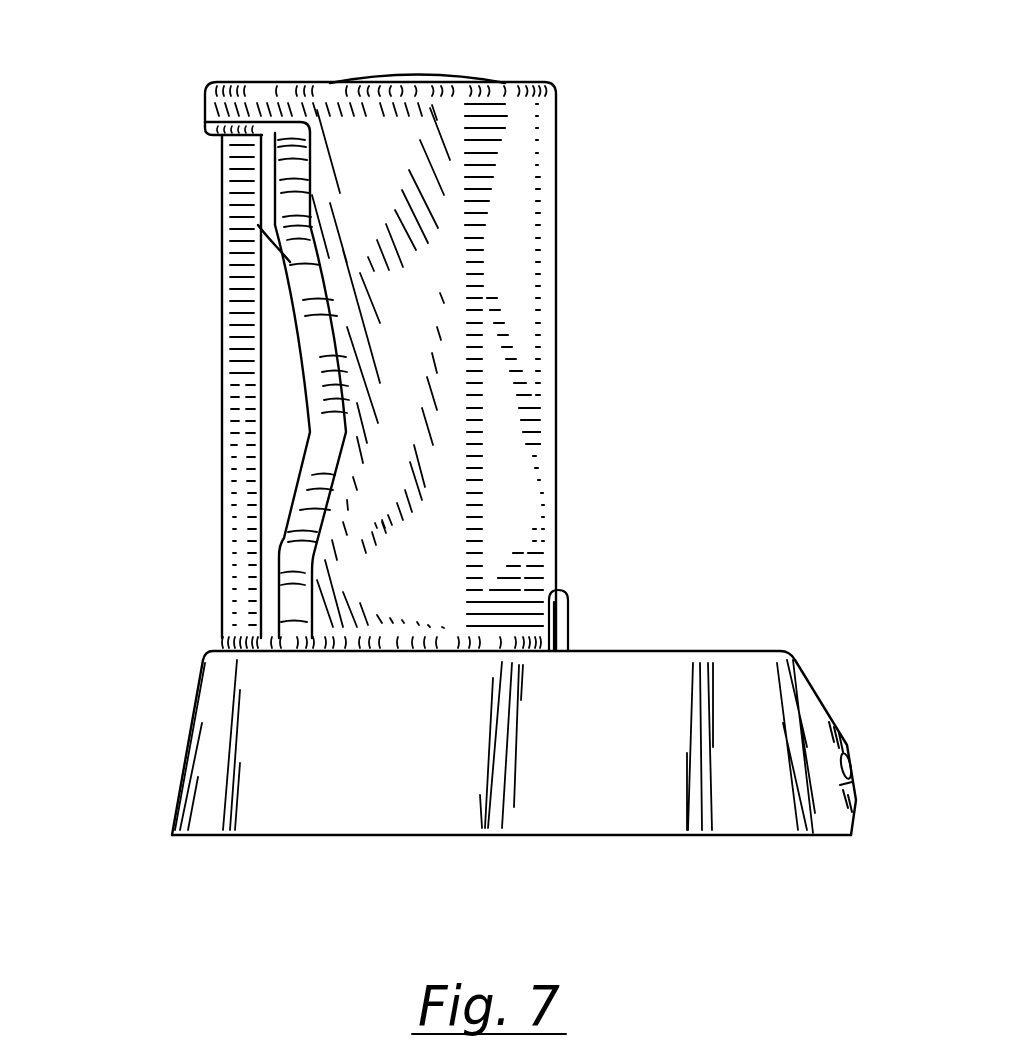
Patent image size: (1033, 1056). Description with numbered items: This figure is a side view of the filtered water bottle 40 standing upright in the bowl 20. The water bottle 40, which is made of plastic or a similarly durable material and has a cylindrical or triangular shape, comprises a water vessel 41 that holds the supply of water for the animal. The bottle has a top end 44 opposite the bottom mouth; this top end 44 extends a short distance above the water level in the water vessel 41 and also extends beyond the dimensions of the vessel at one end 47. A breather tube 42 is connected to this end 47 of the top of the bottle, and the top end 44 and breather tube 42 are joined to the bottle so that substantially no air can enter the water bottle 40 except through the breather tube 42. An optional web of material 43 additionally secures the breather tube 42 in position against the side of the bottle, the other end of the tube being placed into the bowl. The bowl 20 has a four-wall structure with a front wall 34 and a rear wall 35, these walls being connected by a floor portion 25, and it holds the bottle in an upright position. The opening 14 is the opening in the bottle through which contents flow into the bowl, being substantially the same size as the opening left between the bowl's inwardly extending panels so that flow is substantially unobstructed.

The water bottle 40 is at (612, 203).
The top end 44 is at (427, 72).
The end of the top end portion 47 is at (205, 112).
The breather tube 42 is at (223, 242).
The web of material 43 is at (283, 443).
The water vessel 41 is at (487, 300).
The opening 14 is at (567, 620).
The bowl 20 is at (150, 670).
The front wall 34 is at (843, 757).
The rear wall 35 is at (182, 777).
The floor portion 25 is at (467, 837).